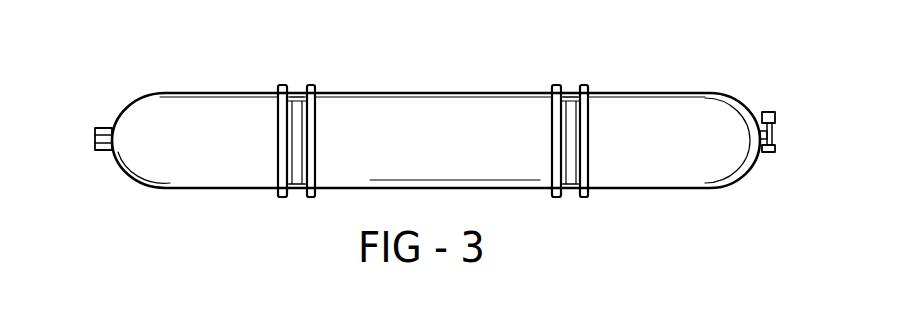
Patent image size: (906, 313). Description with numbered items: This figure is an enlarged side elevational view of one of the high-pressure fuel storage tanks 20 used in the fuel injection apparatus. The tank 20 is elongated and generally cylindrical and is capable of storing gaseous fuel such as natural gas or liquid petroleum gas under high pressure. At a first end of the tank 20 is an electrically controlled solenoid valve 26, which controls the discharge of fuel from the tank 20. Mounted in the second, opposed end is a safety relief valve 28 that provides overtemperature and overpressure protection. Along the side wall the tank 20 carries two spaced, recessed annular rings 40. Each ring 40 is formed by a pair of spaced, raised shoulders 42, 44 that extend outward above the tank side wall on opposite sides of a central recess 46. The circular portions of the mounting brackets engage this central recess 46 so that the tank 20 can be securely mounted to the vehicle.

The fuel storage tank 20 is at (397, 107).
The solenoid valve 26 is at (778, 137).
The safety relief valve 28 is at (95, 133).
The recessed annular ring 40 is at (338, 13).
The raised shoulder 42 is at (280, 87).
The raised shoulder 44 is at (311, 88).
The central recess 46 is at (295, 97).